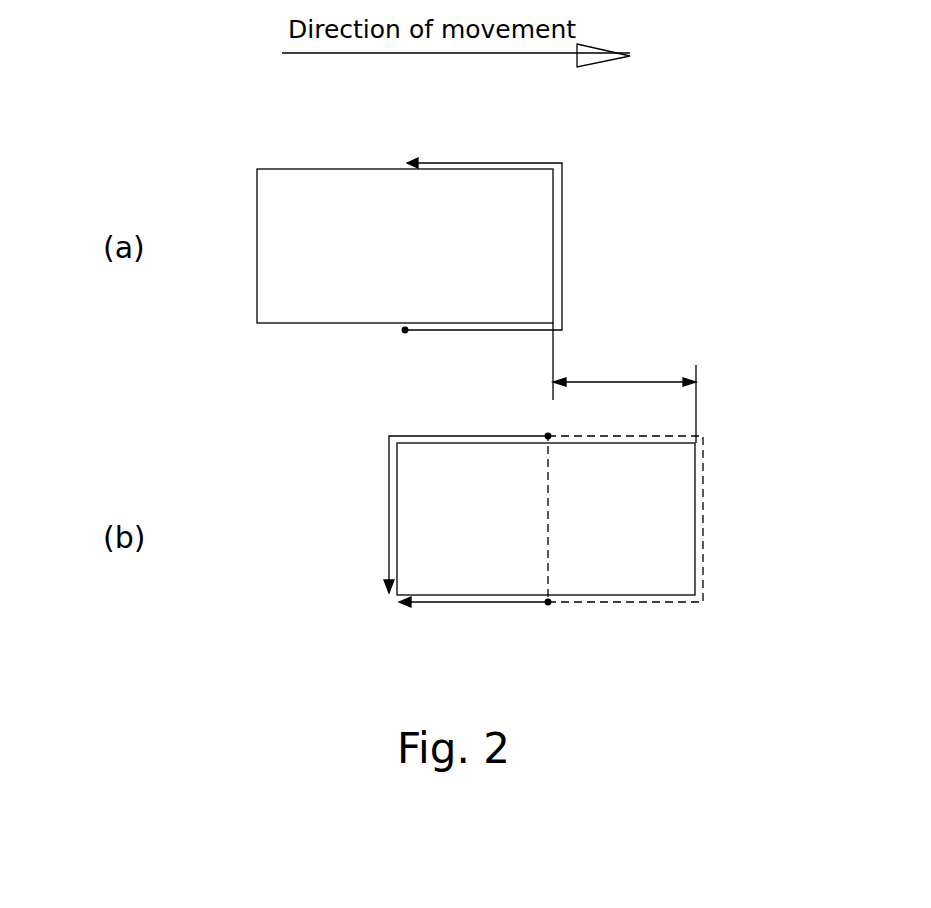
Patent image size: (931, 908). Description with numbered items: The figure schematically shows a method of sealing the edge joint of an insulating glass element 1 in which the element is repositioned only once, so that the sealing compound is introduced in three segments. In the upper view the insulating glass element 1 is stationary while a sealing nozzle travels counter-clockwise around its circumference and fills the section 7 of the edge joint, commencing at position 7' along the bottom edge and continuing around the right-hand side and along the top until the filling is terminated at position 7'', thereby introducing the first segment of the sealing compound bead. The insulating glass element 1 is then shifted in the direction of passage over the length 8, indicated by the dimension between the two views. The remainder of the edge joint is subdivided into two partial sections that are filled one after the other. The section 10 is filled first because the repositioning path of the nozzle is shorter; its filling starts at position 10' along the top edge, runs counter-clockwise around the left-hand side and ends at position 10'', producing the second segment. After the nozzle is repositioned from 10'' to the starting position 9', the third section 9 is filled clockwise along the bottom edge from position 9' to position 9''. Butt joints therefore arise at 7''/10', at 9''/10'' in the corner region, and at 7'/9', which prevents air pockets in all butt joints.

The insulating glass element 1 is at (230, 338).
The section of the edge joint 7 is at (483, 280).
The starting position of section 7 7' is at (394, 362).
The end position of section 7 7'' is at (392, 130).
The length of shift 8 is at (624, 383).
The third section of the edge joint 9 is at (474, 635).
The starting position of section 9 9' is at (539, 633).
The end position of section 9 9'' is at (392, 632).
The section of the edge joint 10 is at (431, 513).
The starting position of section 10 10' is at (562, 469).
The end position of section 10 10'' is at (352, 604).